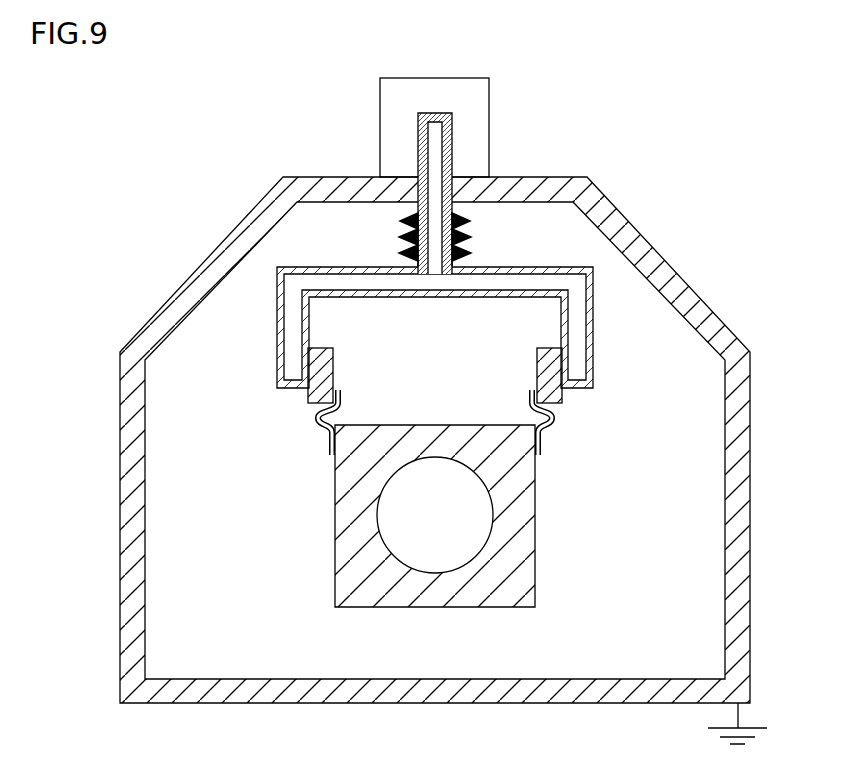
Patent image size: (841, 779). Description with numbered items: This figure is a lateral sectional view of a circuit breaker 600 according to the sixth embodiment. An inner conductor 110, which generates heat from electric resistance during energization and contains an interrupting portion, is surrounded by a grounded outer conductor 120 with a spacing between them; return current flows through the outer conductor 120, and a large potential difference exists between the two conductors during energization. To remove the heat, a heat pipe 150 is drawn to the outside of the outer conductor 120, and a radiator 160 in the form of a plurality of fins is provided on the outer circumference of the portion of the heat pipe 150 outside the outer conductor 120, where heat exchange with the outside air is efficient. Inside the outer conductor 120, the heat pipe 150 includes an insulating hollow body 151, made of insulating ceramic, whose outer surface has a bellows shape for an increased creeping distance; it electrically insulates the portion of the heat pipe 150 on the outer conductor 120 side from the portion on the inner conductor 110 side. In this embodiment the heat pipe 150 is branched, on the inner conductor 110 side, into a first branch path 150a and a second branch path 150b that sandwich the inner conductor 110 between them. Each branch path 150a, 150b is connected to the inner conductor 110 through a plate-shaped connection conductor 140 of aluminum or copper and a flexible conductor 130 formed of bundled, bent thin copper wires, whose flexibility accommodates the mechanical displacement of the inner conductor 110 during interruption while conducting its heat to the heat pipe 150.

The circuit breaker 600 is at (185, 137).
The inner conductor 110 is at (335, 538).
The outer conductor 120 is at (751, 617).
The flexible conductor 130 is at (317, 430).
The connection conductor 140 is at (312, 365).
The heat pipe 150 is at (452, 145).
The first branch path 150a is at (593, 320).
The second branch path 150b is at (278, 327).
The insulating hollow body 151 is at (398, 233).
The radiator 160 is at (413, 78).